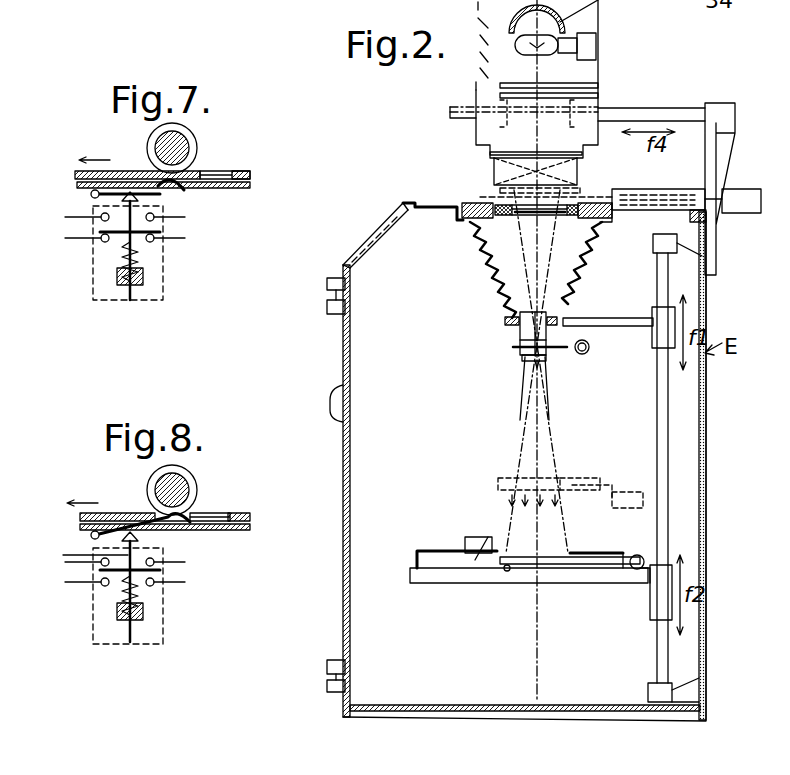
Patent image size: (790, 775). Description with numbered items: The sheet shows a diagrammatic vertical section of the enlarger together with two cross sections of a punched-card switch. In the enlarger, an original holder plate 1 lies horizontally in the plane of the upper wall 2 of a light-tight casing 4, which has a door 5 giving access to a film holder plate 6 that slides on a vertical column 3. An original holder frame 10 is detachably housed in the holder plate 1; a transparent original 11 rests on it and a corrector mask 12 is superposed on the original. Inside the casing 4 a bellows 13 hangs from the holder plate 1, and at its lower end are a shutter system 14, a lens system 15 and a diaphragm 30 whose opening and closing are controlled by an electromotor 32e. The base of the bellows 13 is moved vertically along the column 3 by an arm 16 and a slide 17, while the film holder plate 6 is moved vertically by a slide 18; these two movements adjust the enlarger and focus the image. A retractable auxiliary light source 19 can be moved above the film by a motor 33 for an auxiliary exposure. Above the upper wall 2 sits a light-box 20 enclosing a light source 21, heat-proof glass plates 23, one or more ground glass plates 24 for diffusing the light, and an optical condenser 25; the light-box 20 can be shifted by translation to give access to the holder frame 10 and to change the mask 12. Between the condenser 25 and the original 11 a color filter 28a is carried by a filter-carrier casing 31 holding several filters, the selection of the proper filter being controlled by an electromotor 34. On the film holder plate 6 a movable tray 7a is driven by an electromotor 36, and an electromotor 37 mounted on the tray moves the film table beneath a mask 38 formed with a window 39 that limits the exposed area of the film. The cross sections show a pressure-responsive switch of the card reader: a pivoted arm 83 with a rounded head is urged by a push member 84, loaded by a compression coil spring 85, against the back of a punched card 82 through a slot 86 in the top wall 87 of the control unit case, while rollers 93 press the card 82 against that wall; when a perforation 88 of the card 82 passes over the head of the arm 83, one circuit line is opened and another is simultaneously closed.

In FIG. 2, the original holder plate 1 is at (468, 204).
In FIG. 2, the upper wall 2 is at (418, 206).
In FIG. 2, the vertical column 3 is at (660, 408).
In FIG. 2, the light-tight casing 4 is at (362, 258).
In FIG. 2, the door 5 is at (345, 352).
In FIG. 2, the film holder plate 6 is at (435, 575).
In FIG. 2, the movable tray 7a is at (634, 556).
In FIG. 2, the original holder frame 10 is at (572, 207).
In FIG. 7, the transparent original 11 is at (185, 238).
In FIG. 8, the transparent original 11 is at (185, 582).
In FIG. 2, the transparent original 11 is at (503, 237).
In FIG. 7, the corrector mask 12 is at (185, 217).
In FIG. 8, the corrector mask 12 is at (185, 562).
In FIG. 2, the corrector mask 12 is at (506, 193).
In FIG. 2, the bellows 13 is at (508, 272).
In FIG. 2, the shutter system 14 is at (572, 290).
In FIG. 2, the lens system 15 is at (520, 335).
In FIG. 2, the arm 16 is at (626, 318).
In FIG. 2, the slide 17 is at (652, 333).
In FIG. 2, the slide 18 is at (655, 610).
In FIG. 2, the auxiliary light source 19 is at (505, 478).
In FIG. 2, the light-box 20 is at (606, 27).
In FIG. 2, the light source 21 is at (515, 45).
In FIG. 2, the heat-proof glass plates 23 is at (585, 84).
In FIG. 2, the ground glass plates 24 is at (600, 96).
In FIG. 2, the optical condenser 25 is at (578, 172).
In FIG. 2, the color filter 28a is at (608, 226).
In FIG. 2, the diaphragm 30 is at (548, 352).
In FIG. 2, the filter-carrier casing 31 is at (692, 192).
In FIG. 2, the electromotor 32e is at (586, 354).
In FIG. 2, the motor 33 is at (622, 510).
In FIG. 2, the electromotor 34 is at (738, 196).
In FIG. 2, the electromotor 36 is at (637, 569).
In FIG. 2, the electromotor 37 is at (478, 547).
In FIG. 2, the mask 38 is at (471, 535).
In FIG. 2, the window 39 is at (506, 552).
In FIG. 7, the punched card 82 is at (140, 172).
In FIG. 8, the punched card 82 is at (248, 515).
In FIG. 7, the pivoted arm 83 is at (188, 196).
In FIG. 8, the pivoted arm 83 is at (150, 514).
In FIG. 7, the push member 84 is at (128, 215).
In FIG. 8, the push member 84 is at (98, 567).
In FIG. 7, the compression coil spring 85 is at (135, 245).
In FIG. 8, the compression coil spring 85 is at (135, 600).
In FIG. 7, the slot 86 is at (205, 175).
In FIG. 8, the slot 86 is at (180, 530).
In FIG. 7, the top wall 87 is at (78, 186).
In FIG. 8, the top wall 87 is at (80, 528).
In FIG. 7, the perforation 88 is at (222, 176).
In FIG. 8, the perforation 88 is at (203, 520).
In FIG. 7, the rollers 93 is at (195, 142).
In FIG. 8, the rollers 93 is at (195, 485).